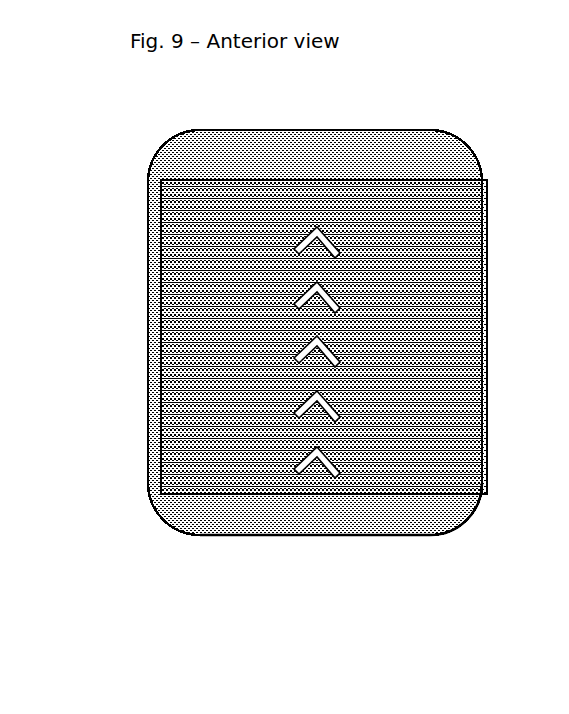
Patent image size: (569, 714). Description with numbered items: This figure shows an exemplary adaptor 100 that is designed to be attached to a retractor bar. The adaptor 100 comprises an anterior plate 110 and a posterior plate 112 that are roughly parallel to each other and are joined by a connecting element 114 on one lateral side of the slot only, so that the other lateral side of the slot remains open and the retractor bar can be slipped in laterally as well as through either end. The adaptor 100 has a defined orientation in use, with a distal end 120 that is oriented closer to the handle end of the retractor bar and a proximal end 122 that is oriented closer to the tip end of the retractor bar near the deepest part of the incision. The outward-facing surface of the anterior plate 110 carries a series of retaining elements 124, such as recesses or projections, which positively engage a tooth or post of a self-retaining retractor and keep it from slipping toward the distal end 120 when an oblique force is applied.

The adaptor 100 is at (351, 332).
The anterior plate 110 is at (233, 195).
The posterior plate 112 is at (455, 515).
The connecting element 114 is at (483, 213).
The distal end 120 is at (377, 130).
The proximal end 122 is at (312, 535).
The retaining elements 124 is at (305, 236).